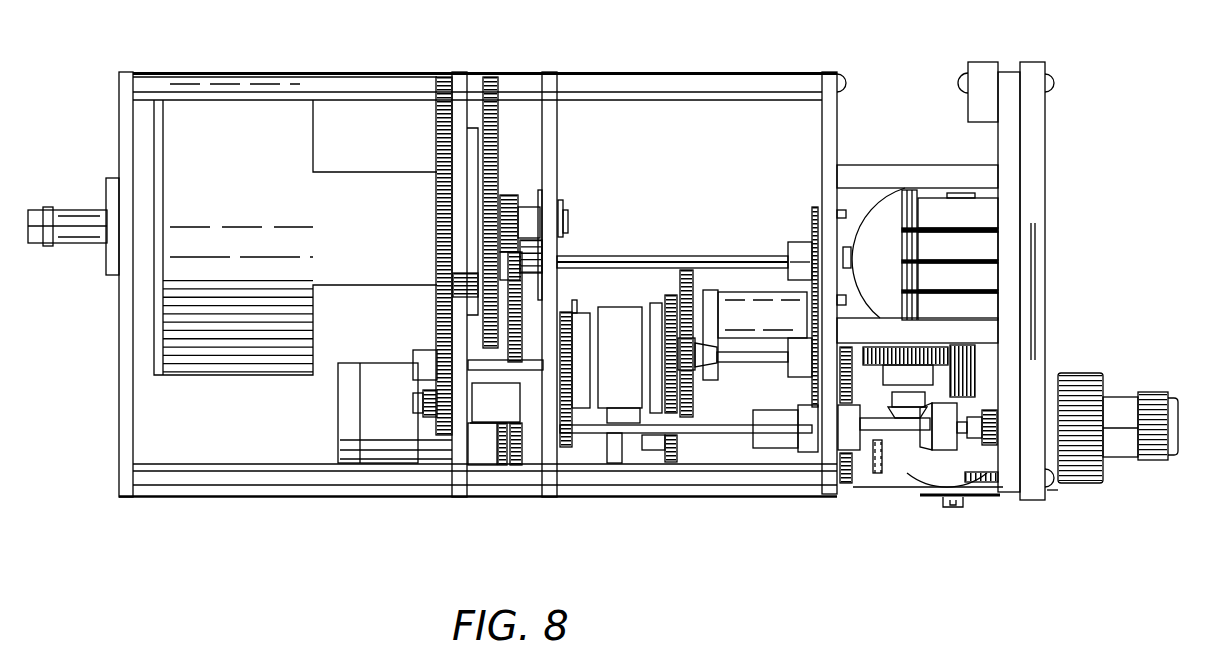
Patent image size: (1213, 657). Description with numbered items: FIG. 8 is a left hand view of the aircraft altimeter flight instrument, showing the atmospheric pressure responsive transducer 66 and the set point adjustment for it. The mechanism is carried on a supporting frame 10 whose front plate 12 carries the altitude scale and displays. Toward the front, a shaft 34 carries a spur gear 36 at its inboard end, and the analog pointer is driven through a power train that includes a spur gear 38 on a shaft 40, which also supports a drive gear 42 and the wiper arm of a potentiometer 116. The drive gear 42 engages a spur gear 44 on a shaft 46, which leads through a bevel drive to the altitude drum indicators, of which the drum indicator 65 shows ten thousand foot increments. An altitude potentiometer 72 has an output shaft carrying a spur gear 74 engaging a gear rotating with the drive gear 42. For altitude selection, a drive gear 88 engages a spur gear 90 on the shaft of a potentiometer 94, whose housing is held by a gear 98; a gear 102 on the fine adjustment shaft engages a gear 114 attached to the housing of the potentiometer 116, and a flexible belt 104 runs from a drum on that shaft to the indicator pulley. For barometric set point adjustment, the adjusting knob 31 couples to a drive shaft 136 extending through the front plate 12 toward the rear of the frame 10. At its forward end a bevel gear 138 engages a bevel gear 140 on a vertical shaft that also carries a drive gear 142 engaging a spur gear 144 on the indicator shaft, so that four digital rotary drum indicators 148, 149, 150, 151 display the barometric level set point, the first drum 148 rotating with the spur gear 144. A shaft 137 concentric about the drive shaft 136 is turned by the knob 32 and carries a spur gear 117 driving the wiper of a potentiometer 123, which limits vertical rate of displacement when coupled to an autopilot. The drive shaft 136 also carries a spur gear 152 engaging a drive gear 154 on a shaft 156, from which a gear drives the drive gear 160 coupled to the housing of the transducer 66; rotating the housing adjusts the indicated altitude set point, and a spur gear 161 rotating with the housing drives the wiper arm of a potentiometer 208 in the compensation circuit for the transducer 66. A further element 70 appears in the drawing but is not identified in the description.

The supporting frame 10 is at (119, 424).
The front plate 12 is at (1038, 495).
The adjusting knob 31 is at (1157, 412).
The adjusting knob 32 is at (1093, 467).
The shaft 34 is at (788, 257).
The spur gear 36 is at (812, 222).
The spur gear 38 is at (789, 401).
The shaft 40 is at (748, 357).
The drive gear 42 is at (517, 465).
The spur gear 44 is at (542, 267).
The shaft 46 is at (616, 258).
The rotary drum digital indicator 65 is at (880, 268).
The altitude responsive pressure transducer 66 is at (237, 192).
The gear 70 is at (490, 77).
The altitude potentiometer 72 is at (352, 407).
The spur gear 74 is at (502, 467).
The drive gear 88 is at (845, 492).
The spur gear 90 is at (692, 360).
The potentiometer 94 is at (758, 283).
The gear 98 is at (687, 267).
The gear 102 is at (680, 448).
The flexible belt 104 is at (906, 490).
The gear 114 is at (670, 295).
The potentiometer 116 is at (628, 325).
The spur gear 117 is at (990, 447).
The potentiometer 123 is at (755, 442).
The drive shaft 136 is at (620, 432).
The shaft 137 is at (880, 447).
The bevel gear 138 is at (928, 447).
The bevel gear 140 is at (900, 424).
The drive gear 142 is at (912, 357).
The spur gear 144 is at (975, 368).
The digital rotary drum indicator 148 is at (997, 312).
The digital rotary drum indicator 149 is at (993, 282).
The digital rotary drum indicator 150 is at (995, 250).
The digital rotary drum indicator 151 is at (995, 222).
The spur gear 152 is at (573, 445).
The drive gear 154 is at (578, 308).
The shaft 156 is at (488, 367).
The drive gear 160 is at (445, 77).
The spur gear 161 is at (425, 405).
The potentiometer 208 is at (488, 470).